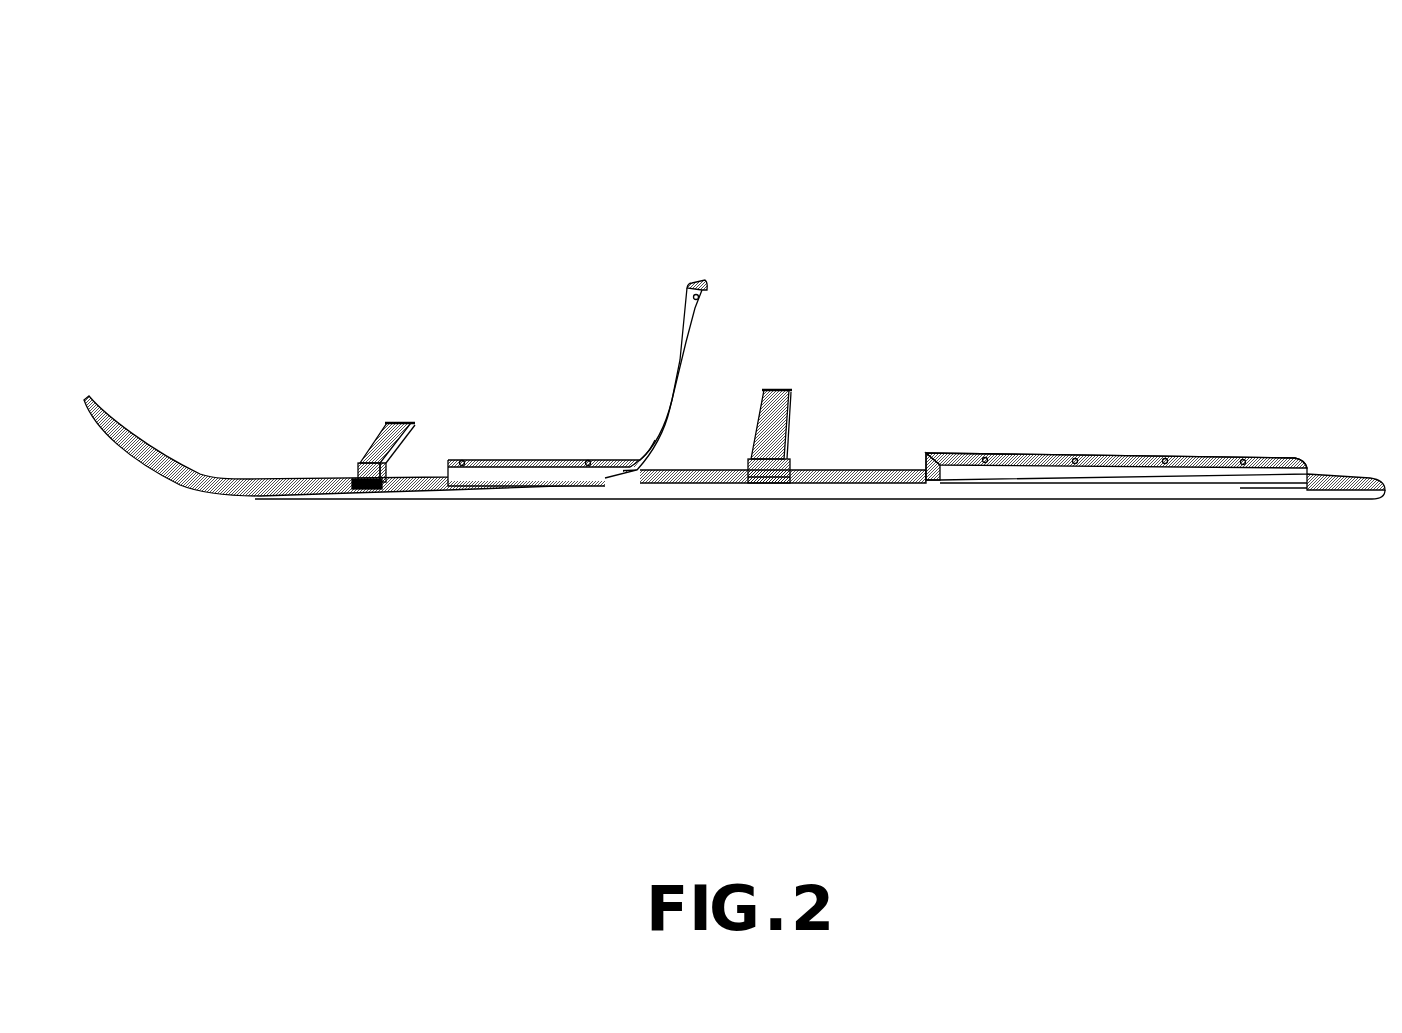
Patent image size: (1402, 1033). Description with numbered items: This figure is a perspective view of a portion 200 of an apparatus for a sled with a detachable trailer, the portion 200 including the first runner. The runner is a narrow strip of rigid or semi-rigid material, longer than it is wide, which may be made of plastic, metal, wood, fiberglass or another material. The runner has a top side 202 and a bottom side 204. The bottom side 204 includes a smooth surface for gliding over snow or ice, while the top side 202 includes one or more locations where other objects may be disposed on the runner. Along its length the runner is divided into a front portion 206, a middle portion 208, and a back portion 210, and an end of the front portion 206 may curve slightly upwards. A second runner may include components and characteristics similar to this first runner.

The portion 200 is at (177, 125).
The top side 202 is at (865, 475).
The bottom side 204 is at (820, 555).
The front portion 206 is at (296, 272).
The middle portion 208 is at (773, 270).
The back portion 210 is at (1134, 290).